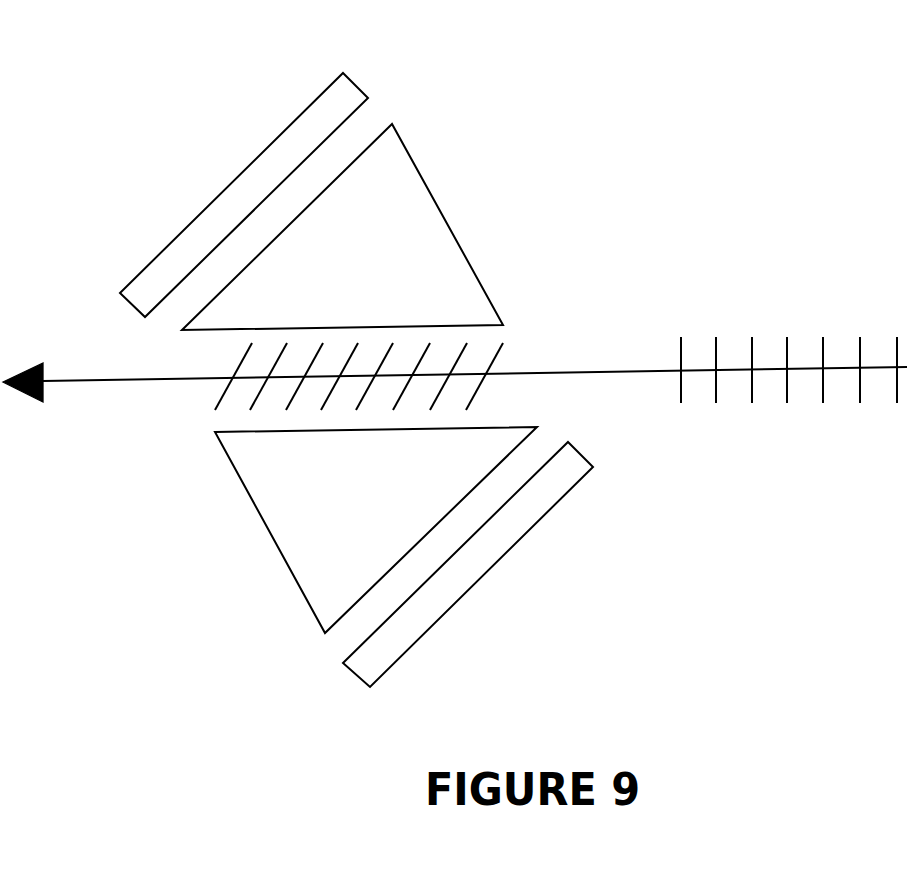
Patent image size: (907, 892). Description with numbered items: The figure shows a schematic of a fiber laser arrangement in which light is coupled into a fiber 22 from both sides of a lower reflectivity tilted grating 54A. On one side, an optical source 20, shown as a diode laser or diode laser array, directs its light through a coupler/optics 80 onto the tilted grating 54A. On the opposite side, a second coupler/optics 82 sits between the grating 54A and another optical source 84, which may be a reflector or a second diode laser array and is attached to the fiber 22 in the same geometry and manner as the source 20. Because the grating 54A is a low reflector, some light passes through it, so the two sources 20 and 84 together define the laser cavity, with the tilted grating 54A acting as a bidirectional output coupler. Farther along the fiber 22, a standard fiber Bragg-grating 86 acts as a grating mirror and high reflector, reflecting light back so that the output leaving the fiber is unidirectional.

The optical source 20 is at (362, 67).
The fiber 22 is at (583, 362).
The tilted grating 54A is at (523, 350).
The coupler/optics 80 is at (453, 180).
The coupler/optics 82 is at (247, 513).
The optical source 84 is at (528, 533).
The fiber Bragg-grating 86 is at (787, 313).